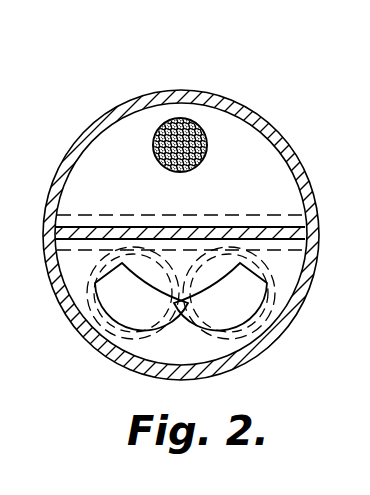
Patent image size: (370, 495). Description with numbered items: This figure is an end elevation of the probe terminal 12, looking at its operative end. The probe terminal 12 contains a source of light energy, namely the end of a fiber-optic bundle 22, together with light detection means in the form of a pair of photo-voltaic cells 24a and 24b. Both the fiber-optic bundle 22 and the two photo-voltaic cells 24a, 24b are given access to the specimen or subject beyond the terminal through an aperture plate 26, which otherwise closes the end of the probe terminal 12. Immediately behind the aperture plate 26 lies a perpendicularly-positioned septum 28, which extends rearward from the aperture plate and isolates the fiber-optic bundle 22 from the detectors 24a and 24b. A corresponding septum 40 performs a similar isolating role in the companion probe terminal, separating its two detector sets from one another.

The probe terminal 12 is at (143, 79).
The fiber-optic bundle 22 is at (184, 119).
The photo-voltaic cell 24a is at (92, 302).
The photo-voltaic cell 24b is at (262, 322).
The aperture plate 26 is at (269, 142).
The septum 28 is at (311, 233).
The septum 40 is at (314, 271).